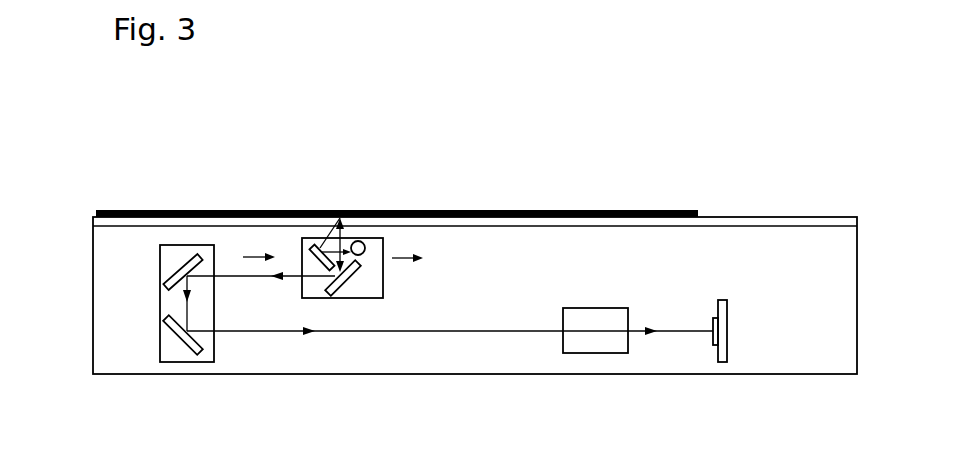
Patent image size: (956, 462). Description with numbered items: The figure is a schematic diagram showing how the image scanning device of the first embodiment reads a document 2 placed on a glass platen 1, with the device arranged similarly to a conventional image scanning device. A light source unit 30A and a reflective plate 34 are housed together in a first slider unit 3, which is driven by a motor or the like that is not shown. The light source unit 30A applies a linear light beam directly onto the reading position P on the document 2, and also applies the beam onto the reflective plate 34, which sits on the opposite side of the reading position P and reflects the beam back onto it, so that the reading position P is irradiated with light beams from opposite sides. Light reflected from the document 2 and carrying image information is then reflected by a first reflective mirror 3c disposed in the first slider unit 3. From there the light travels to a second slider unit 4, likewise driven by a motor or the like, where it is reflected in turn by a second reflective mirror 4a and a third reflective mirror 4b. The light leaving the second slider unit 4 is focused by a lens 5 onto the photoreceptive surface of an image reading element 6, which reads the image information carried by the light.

The glass platen 1 is at (755, 218).
The document 2 is at (490, 210).
The first slider unit 3 is at (383, 280).
The first reflective mirror 3c is at (345, 280).
The light source unit 30A is at (363, 242).
The reflective plate 34 is at (312, 245).
The second slider unit 4 is at (181, 245).
The second reflective mirror 4a is at (166, 266).
The third reflective mirror 4b is at (166, 330).
The lens 5 is at (585, 308).
The image reading element 6 is at (713, 318).
The reading position P is at (338, 218).